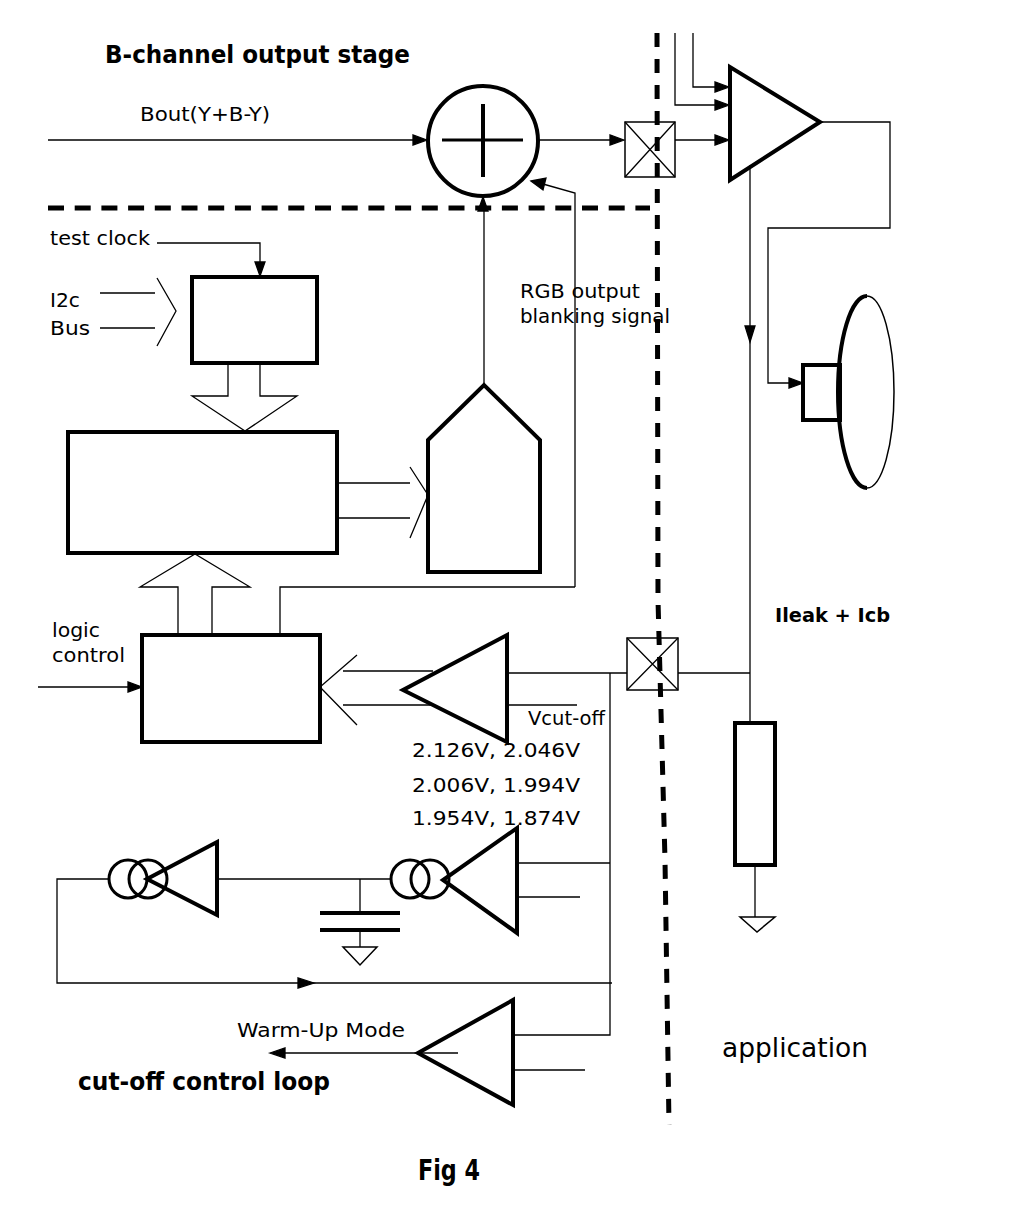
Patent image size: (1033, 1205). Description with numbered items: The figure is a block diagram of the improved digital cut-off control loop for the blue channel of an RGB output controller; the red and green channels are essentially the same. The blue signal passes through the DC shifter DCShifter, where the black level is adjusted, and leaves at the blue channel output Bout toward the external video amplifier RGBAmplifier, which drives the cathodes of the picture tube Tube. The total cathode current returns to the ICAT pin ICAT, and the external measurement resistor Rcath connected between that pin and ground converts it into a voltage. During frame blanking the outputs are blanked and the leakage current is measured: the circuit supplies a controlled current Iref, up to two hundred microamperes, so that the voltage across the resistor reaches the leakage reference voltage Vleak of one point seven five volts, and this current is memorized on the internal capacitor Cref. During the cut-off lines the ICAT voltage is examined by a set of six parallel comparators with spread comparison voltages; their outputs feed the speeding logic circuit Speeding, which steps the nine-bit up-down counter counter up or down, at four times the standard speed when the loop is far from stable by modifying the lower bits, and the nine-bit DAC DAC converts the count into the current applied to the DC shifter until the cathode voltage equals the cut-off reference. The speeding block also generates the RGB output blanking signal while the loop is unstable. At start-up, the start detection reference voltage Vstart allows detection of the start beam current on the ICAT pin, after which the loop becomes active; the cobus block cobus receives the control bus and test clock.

The DC shifter DCShifter is at (484, 123).
The blue channel output Bout is at (634, 130).
The external video amplifier RGBAmplifier is at (804, 136).
The picture tube Tube is at (848, 412).
The external measurement resistor Rcath is at (792, 794).
The cobus block cobus is at (254, 320).
The 9-bit up-down counter is at (202, 492).
The 9-bit DAC is at (484, 478).
The speeding logic circuit Speeding is at (231, 688).
The ICAT pin ICAT is at (679, 646).
The leakage reference voltage Vleak is at (516, 895).
The internal capacitor Cref is at (330, 922).
The controlled current Iref is at (334, 933).
The start detection reference voltage Vstart is at (506, 1068).